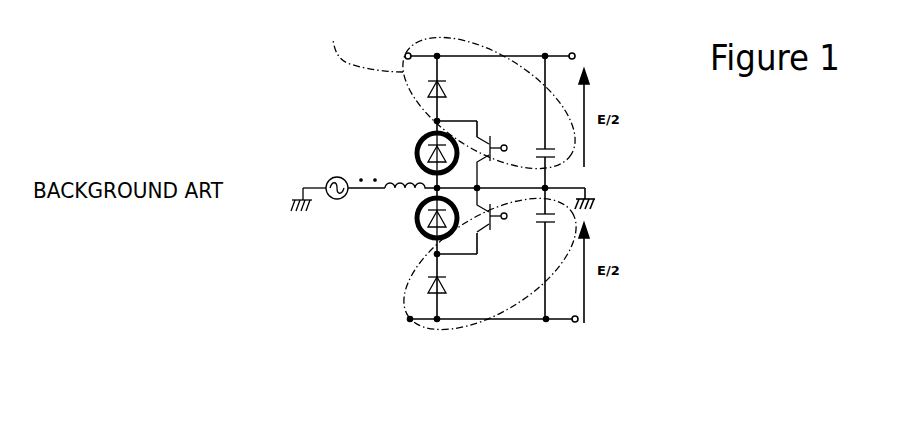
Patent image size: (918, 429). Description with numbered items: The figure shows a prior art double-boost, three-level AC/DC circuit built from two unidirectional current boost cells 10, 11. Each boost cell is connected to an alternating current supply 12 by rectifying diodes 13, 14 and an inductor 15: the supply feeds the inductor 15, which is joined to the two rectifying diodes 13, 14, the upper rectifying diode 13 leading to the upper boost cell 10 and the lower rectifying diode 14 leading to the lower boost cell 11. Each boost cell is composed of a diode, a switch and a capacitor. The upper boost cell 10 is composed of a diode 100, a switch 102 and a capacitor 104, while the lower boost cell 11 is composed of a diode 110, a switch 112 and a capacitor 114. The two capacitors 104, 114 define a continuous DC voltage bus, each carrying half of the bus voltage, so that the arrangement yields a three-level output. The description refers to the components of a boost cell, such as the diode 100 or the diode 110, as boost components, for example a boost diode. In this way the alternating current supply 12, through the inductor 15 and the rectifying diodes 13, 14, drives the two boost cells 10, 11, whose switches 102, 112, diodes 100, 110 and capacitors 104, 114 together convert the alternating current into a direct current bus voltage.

The unidirectional current boost cell 10 is at (458, 102).
The unidirectional current boost cell 11 is at (467, 326).
The alternating current supply 12 is at (327, 177).
The rectifying diode 13 is at (415, 153).
The rectifying diode 14 is at (415, 218).
The inductor 15 is at (393, 172).
The diode 100 is at (447, 88).
The switch 102 is at (495, 147).
The capacitor 104 is at (556, 153).
The diode 110 is at (427, 287).
The switch 112 is at (500, 231).
The capacitor 114 is at (556, 220).